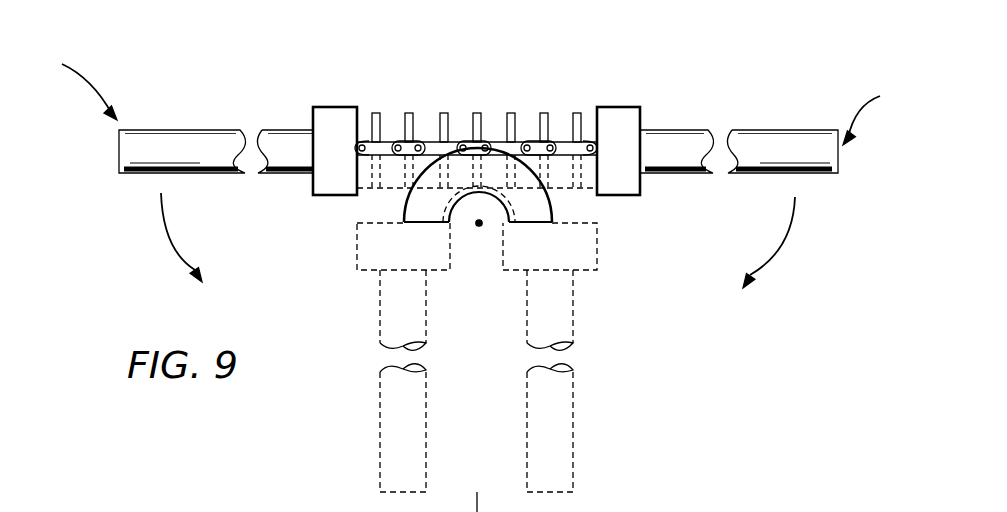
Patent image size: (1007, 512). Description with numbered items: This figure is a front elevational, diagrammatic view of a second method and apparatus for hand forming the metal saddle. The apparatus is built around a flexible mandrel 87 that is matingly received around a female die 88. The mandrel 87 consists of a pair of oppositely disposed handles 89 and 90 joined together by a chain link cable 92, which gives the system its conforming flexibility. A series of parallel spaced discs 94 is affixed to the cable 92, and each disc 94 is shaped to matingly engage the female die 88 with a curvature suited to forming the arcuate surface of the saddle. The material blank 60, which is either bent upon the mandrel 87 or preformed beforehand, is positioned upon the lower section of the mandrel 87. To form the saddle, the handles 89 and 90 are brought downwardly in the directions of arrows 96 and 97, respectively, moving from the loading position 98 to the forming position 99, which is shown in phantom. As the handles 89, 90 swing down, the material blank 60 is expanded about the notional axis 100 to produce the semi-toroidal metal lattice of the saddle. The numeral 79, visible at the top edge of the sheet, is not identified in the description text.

The material blank 60 is at (393, 175).
The transfer assembly 79 is at (545, 6).
The flexible mandrel 87 is at (524, 124).
The female die 88 is at (553, 222).
The handle 89 is at (162, 129).
The handle 90 is at (752, 128).
The chain link cable 92 is at (386, 142).
The discs 94 is at (441, 113).
The arrow 96 is at (167, 228).
The arrow 97 is at (790, 222).
The loading position 98 is at (474, 94).
The forming position 99 is at (355, 461).
The notional axis 100 is at (479, 226).